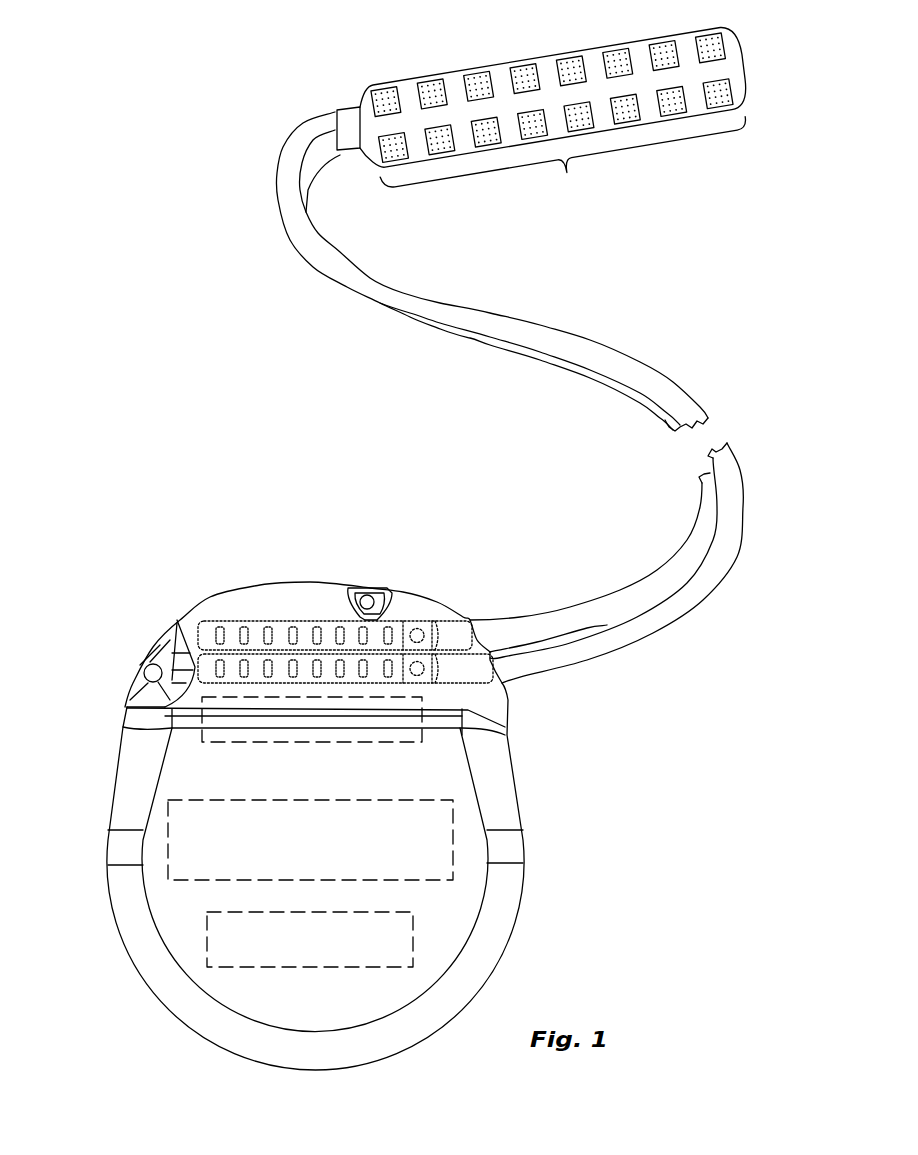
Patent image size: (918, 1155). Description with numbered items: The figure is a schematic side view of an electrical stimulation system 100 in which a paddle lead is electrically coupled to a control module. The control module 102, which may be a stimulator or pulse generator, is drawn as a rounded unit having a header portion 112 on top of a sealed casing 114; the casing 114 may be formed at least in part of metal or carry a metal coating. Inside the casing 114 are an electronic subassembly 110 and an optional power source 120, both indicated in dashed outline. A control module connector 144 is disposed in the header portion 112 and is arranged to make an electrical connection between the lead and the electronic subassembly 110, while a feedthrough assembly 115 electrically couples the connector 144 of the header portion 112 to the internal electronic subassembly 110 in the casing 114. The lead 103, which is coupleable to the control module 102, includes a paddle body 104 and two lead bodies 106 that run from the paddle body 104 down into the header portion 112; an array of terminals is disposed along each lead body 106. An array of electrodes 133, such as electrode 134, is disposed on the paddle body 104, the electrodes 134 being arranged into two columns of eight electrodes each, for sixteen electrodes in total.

The electrical stimulation system 100 is at (112, 126).
The control module 102 is at (71, 592).
The lead 103 is at (694, 315).
The paddle body 104 is at (743, 64).
The lead body 106 is at (590, 338).
The electronic subassembly 110 is at (185, 843).
The header portion 112 is at (147, 602).
The sealed casing 114 is at (76, 749).
The feedthrough assembly 115 is at (423, 737).
The power source 120 is at (223, 943).
The array of electrodes 133 is at (556, 119).
The electrode 134 is at (435, 82).
The control module connector 144 is at (397, 618).